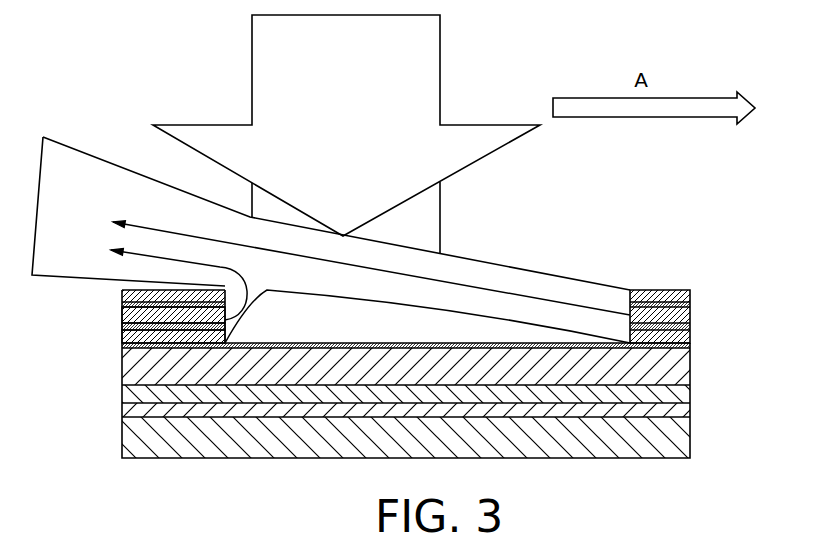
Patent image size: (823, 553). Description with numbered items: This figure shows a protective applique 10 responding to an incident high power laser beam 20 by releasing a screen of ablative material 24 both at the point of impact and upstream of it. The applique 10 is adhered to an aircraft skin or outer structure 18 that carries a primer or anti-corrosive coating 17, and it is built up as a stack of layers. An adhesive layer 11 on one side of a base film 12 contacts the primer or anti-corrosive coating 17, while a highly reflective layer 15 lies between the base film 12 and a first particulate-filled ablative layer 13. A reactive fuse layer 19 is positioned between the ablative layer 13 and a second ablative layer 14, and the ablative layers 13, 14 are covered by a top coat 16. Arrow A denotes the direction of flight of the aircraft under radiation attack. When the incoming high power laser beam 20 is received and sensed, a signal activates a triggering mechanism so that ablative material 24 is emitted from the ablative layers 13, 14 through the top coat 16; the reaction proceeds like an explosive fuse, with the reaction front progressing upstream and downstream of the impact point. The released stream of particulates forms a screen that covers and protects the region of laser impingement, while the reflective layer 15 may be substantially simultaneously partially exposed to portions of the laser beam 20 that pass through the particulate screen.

The applique 10 is at (697, 292).
The adhesive layer 11 is at (677, 393).
The base film 12 is at (175, 377).
The ablative layer 13 is at (141, 333).
The ablative layer 14 is at (122, 312).
The reflective layer 15 is at (160, 346).
The top coat 16 is at (661, 290).
The primer or anti-corrosive coating 17 is at (687, 412).
The aircraft skin or outer structure 18 is at (682, 440).
The fuse layer 19 is at (120, 326).
The high power laser beam 20 is at (423, 63).
The ablative material 24 is at (153, 195).